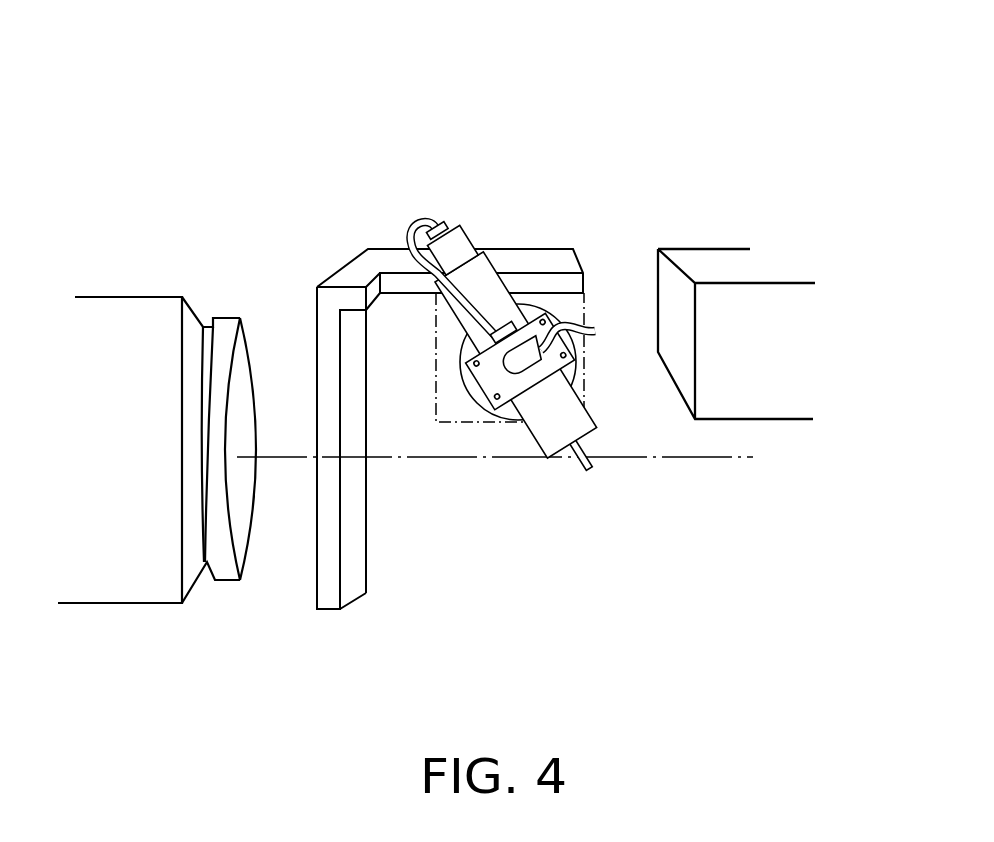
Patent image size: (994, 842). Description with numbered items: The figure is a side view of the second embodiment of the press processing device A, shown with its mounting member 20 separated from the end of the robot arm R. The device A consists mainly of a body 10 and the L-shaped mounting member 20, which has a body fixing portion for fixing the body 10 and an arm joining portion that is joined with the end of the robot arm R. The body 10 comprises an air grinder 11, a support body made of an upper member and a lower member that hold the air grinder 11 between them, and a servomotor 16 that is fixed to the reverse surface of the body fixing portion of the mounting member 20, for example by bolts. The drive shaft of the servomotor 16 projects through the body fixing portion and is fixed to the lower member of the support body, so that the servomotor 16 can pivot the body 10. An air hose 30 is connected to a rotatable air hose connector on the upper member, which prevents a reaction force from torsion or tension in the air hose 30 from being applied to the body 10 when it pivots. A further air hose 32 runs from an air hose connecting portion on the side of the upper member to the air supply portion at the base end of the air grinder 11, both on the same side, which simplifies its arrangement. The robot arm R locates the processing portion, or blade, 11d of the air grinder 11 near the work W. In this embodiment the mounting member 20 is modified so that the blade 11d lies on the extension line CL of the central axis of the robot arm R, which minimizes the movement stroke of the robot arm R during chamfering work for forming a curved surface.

The press processing device A is at (808, 50).
The robot arm R is at (145, 293).
The work W is at (725, 248).
The extension line of the central axis of the robot arm CL is at (514, 458).
The body 10 is at (460, 430).
The air grinder 11 is at (528, 441).
The processing portion (blade) 11d is at (583, 466).
The servomotor 16 is at (548, 302).
The mounting member 20 is at (330, 615).
The air hose 30 is at (591, 326).
The air hose 32 is at (427, 215).